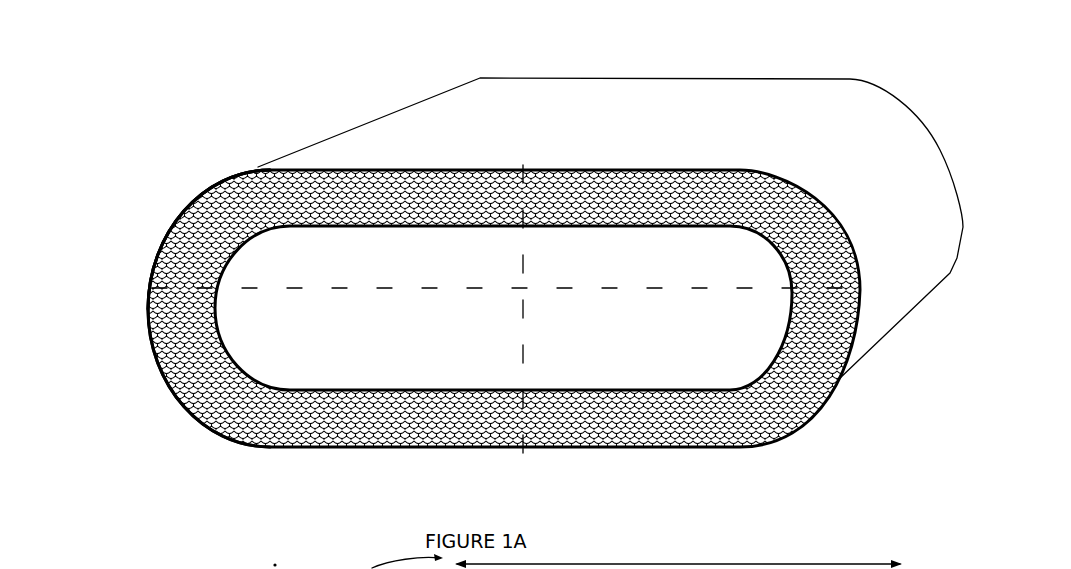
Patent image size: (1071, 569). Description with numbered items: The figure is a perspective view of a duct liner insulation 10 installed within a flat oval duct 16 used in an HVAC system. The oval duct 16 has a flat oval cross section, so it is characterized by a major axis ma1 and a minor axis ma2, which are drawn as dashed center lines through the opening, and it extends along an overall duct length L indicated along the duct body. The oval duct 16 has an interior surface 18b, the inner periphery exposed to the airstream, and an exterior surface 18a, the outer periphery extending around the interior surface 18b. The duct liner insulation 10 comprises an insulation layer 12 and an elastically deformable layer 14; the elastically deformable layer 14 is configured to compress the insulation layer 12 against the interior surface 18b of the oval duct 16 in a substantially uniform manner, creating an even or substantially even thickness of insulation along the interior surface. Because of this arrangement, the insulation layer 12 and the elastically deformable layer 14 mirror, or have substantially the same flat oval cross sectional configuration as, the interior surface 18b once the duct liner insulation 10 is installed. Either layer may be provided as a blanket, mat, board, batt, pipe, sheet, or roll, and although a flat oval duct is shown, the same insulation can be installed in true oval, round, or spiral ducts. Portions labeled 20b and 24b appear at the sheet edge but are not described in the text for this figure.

The duct liner insulation 10 is at (496, 309).
The insulation layer 12 is at (665, 428).
The elastically deformable layer 14 is at (763, 373).
The flat oval duct 16 is at (343, 150).
The exterior surface 18a is at (153, 273).
The interior surface 18b is at (190, 230).
The major axis ma1 is at (295, 289).
The minor axis ma2 is at (517, 360).
The overall duct length L is at (258, 167).
The body portion 20b is at (640, 568).
The end portion 24b is at (708, 560).